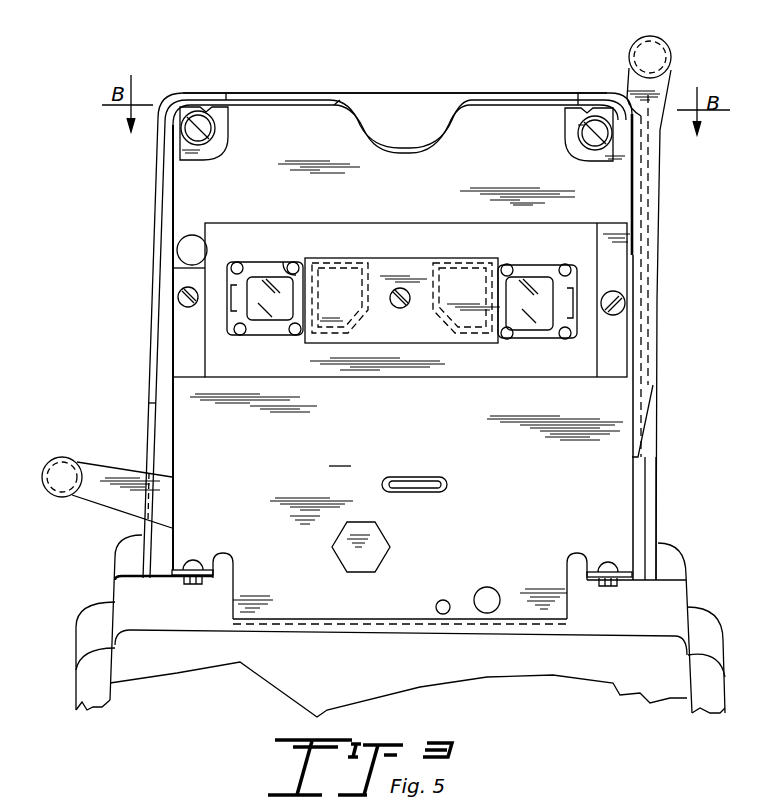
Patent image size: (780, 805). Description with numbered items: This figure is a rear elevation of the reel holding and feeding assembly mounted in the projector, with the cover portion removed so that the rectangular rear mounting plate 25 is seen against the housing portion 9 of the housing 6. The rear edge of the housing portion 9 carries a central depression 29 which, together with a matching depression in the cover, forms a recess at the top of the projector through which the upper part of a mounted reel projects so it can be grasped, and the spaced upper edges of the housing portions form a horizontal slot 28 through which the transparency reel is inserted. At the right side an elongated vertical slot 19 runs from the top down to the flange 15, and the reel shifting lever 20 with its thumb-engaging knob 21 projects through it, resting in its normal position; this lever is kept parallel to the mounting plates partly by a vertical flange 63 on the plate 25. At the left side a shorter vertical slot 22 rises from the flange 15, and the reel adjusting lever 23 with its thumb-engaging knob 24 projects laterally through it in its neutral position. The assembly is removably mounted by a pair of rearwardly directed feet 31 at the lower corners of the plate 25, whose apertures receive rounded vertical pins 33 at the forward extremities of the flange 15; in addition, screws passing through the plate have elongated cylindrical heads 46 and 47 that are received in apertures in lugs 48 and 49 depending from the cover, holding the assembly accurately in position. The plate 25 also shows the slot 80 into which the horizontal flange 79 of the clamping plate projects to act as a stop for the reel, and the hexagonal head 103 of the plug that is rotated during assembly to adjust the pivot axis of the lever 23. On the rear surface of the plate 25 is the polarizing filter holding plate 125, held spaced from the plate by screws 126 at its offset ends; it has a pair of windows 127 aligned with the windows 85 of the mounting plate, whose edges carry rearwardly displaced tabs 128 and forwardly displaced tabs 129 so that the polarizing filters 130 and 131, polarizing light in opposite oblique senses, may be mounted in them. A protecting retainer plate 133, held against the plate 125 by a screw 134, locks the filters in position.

The housing 6 is at (708, 640).
The housing portion 9 is at (278, 100).
The flange 15 is at (277, 620).
The vertical slot 19 is at (650, 495).
The reel shifting lever 20 is at (657, 87).
The thumb-engaging knob 21 is at (661, 44).
The vertical slot 22 is at (153, 415).
The reel adjusting lever 23 is at (133, 512).
The thumb-engaging knob 24 is at (60, 487).
The rectangular rear mounting plate 25 is at (350, 466).
The horizontal slot 28 is at (560, 102).
The central depression 29 is at (425, 110).
The feet 31 is at (176, 567).
The vertical pins 33 is at (196, 560).
The cylindrical head 46 is at (590, 135).
The cylindrical head 47 is at (210, 133).
The lug 48 is at (590, 162).
The lug 49 is at (200, 157).
The vertical flange 63 is at (648, 458).
The horizontal flange 79 is at (427, 482).
The slot 80 is at (430, 488).
The windows 85 is at (257, 313).
The hexagonal head 103 is at (375, 555).
The polarizing filter holding plate 125 is at (418, 221).
The screws 126 is at (180, 300).
The windows 127 is at (263, 260).
The tabs 128 is at (229, 300).
The tabs 129 is at (238, 265).
The polarizing filter 130 is at (282, 272).
The polarizing filter 131 is at (550, 270).
The protecting retainer plate 133 is at (412, 268).
The screw 134 is at (403, 307).